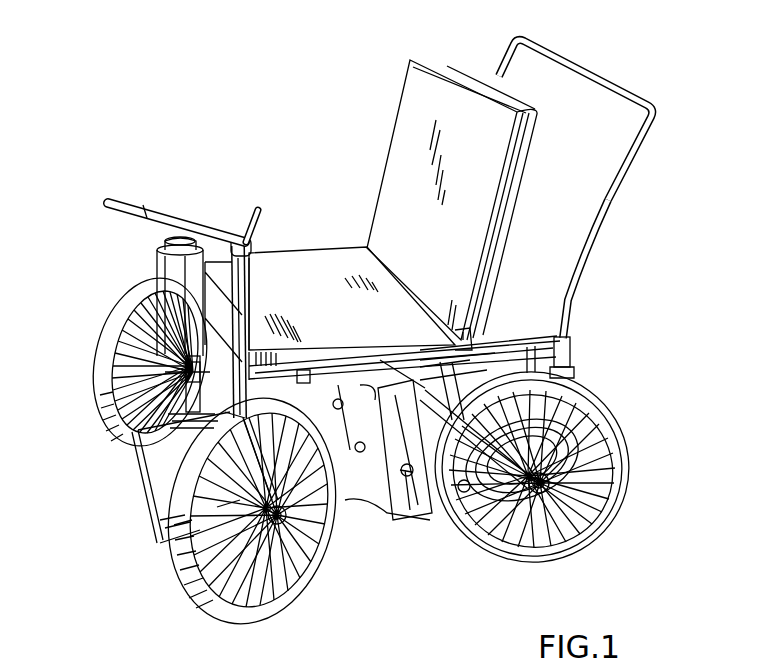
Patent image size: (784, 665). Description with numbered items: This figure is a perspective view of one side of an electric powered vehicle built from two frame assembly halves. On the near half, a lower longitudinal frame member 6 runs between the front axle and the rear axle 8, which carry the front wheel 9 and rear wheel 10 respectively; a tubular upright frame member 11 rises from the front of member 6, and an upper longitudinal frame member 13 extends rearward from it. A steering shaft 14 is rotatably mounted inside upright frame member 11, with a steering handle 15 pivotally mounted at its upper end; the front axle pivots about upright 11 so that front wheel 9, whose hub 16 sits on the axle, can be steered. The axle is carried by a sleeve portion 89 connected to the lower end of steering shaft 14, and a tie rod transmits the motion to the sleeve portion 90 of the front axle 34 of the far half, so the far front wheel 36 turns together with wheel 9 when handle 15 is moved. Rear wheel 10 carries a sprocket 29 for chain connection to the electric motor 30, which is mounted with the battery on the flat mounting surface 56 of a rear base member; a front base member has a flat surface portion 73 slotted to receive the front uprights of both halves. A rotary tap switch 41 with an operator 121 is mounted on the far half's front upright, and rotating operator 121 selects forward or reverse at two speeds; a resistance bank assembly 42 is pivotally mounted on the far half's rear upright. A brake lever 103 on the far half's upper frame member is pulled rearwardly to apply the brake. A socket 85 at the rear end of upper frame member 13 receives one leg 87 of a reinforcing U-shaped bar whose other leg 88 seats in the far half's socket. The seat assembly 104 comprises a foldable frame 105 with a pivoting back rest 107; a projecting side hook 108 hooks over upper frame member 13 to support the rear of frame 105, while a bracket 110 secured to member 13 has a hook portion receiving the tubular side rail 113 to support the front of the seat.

The lower longitudinal frame member 6 is at (365, 503).
The rear axle 8 is at (543, 503).
The front wheel 9 is at (197, 592).
The rear wheel 10 is at (623, 452).
The upright frame member 11 is at (220, 428).
The upper longitudinal frame member 13 is at (362, 362).
The steering shaft 14 is at (252, 255).
The steering handle 15 is at (162, 212).
The hub 16 is at (310, 550).
The sprocket 29 is at (600, 463).
The electric motor 30 is at (387, 473).
The front axle 34 is at (167, 363).
The front wheel 36 is at (120, 320).
The rotary tap switch 41 is at (170, 283).
The resistance bank assembly 42 is at (515, 317).
The flat mounting surface 56 is at (405, 490).
The flat surface portion 73 is at (150, 448).
The socket 85 is at (567, 340).
The leg 87 is at (600, 224).
The leg 88 is at (500, 67).
The sleeve portion 89 is at (217, 507).
The sleeve portion 90 is at (137, 397).
The brake lever 103 is at (243, 217).
The seat assembly 104 is at (312, 260).
The foldable frame 105 is at (560, 385).
The back rest 107 is at (412, 98).
The side hook 108 is at (500, 345).
The bracket 110 is at (307, 347).
The tubular side rail 113 is at (407, 377).
The operator 121 is at (167, 238).